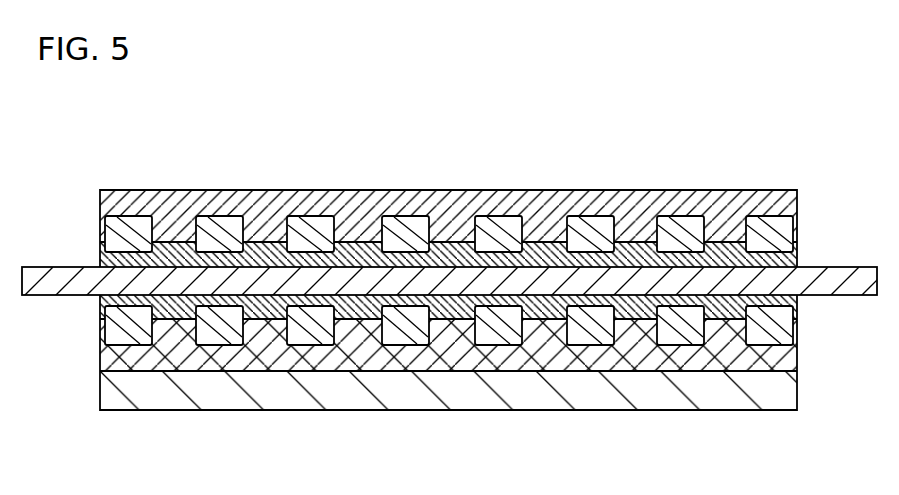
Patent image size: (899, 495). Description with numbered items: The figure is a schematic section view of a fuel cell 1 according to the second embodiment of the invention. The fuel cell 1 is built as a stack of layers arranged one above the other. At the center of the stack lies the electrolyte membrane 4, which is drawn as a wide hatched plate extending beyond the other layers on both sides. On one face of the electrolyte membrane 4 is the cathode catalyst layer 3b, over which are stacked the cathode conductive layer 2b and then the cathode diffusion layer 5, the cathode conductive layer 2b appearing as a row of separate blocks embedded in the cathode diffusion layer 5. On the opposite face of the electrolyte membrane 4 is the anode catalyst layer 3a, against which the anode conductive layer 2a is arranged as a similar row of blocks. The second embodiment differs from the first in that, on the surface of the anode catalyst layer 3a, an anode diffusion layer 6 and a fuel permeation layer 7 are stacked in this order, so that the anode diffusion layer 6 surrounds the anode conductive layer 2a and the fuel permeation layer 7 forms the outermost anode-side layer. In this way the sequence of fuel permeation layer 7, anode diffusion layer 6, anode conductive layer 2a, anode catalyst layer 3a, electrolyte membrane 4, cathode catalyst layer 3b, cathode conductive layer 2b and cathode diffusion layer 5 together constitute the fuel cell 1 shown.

The fuel cell 1 is at (664, 136).
The anode conductive layer 2a is at (588, 330).
The cathode conductive layer 2b is at (593, 238).
The anode catalyst layer 3a is at (453, 305).
The cathode catalyst layer 3b is at (453, 240).
The electrolyte membrane 4 is at (63, 268).
The cathode diffusion layer 5 is at (360, 237).
The anode diffusion layer 6 is at (360, 350).
The fuel permeation layer 7 is at (313, 388).